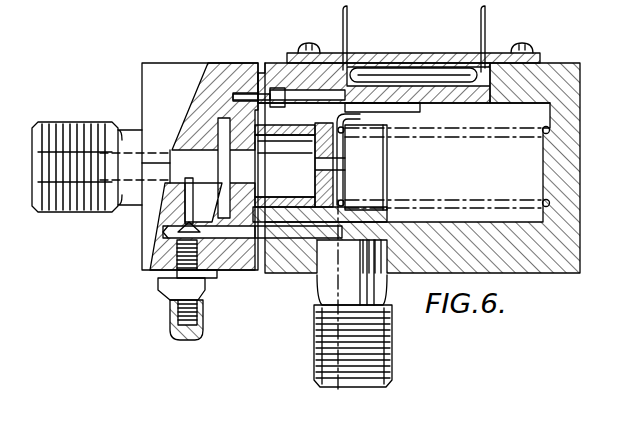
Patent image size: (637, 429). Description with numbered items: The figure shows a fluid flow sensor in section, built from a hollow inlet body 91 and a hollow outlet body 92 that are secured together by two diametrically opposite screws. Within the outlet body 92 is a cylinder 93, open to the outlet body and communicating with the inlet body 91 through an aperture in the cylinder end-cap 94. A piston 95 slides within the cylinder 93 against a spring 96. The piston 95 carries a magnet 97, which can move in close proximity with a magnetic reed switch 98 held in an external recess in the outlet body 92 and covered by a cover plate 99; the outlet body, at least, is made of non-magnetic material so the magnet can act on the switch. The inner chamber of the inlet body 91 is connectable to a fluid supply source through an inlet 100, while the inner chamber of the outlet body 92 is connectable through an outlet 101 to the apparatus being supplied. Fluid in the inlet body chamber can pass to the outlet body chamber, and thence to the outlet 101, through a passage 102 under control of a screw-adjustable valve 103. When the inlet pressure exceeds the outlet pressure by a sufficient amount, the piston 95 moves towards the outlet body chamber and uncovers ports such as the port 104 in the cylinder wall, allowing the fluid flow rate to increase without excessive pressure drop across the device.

The inlet body 91 is at (155, 72).
The outlet body 92 is at (558, 72).
The cylinder 93 is at (377, 190).
The cylinder end-cap 94 is at (251, 190).
The piston 95 is at (320, 207).
The spring 96 is at (455, 133).
The magnet 97 is at (404, 108).
The magnetic reed switch 98 is at (388, 72).
The cover plate 99 is at (330, 56).
The inlet 100 is at (52, 122).
The outlet 101 is at (313, 333).
The passage 102 is at (204, 278).
The screw-adjustable valve 103 is at (160, 229).
The port 104 is at (287, 108).